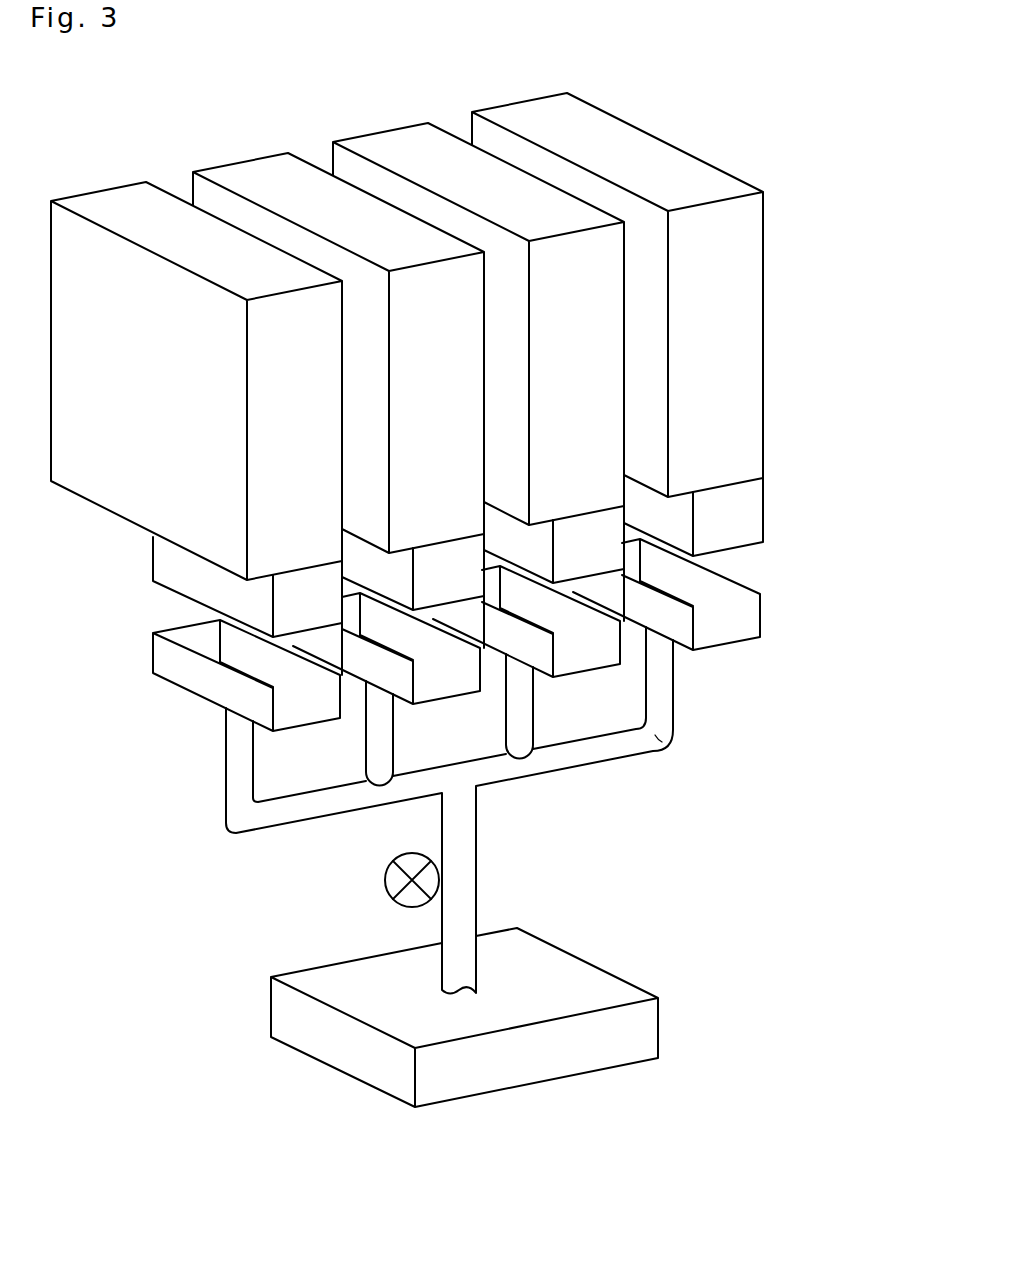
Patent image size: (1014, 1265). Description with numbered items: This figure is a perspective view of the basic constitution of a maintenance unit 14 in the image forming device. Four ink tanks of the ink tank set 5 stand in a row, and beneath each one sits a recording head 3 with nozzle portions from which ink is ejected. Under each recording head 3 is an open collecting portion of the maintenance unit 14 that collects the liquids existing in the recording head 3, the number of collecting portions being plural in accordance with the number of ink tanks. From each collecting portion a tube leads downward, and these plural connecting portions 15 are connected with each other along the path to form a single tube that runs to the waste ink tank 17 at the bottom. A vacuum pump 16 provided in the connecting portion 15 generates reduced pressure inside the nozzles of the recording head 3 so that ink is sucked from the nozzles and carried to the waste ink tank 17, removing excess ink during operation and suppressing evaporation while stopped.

The ink tank set 5 is at (802, 290).
The recording head 3 is at (800, 528).
The maintenance unit 14 is at (481, 823).
The pipe 15 is at (208, 798).
The vacuum pump 16 is at (355, 899).
The waste ink tank 17 is at (244, 1052).